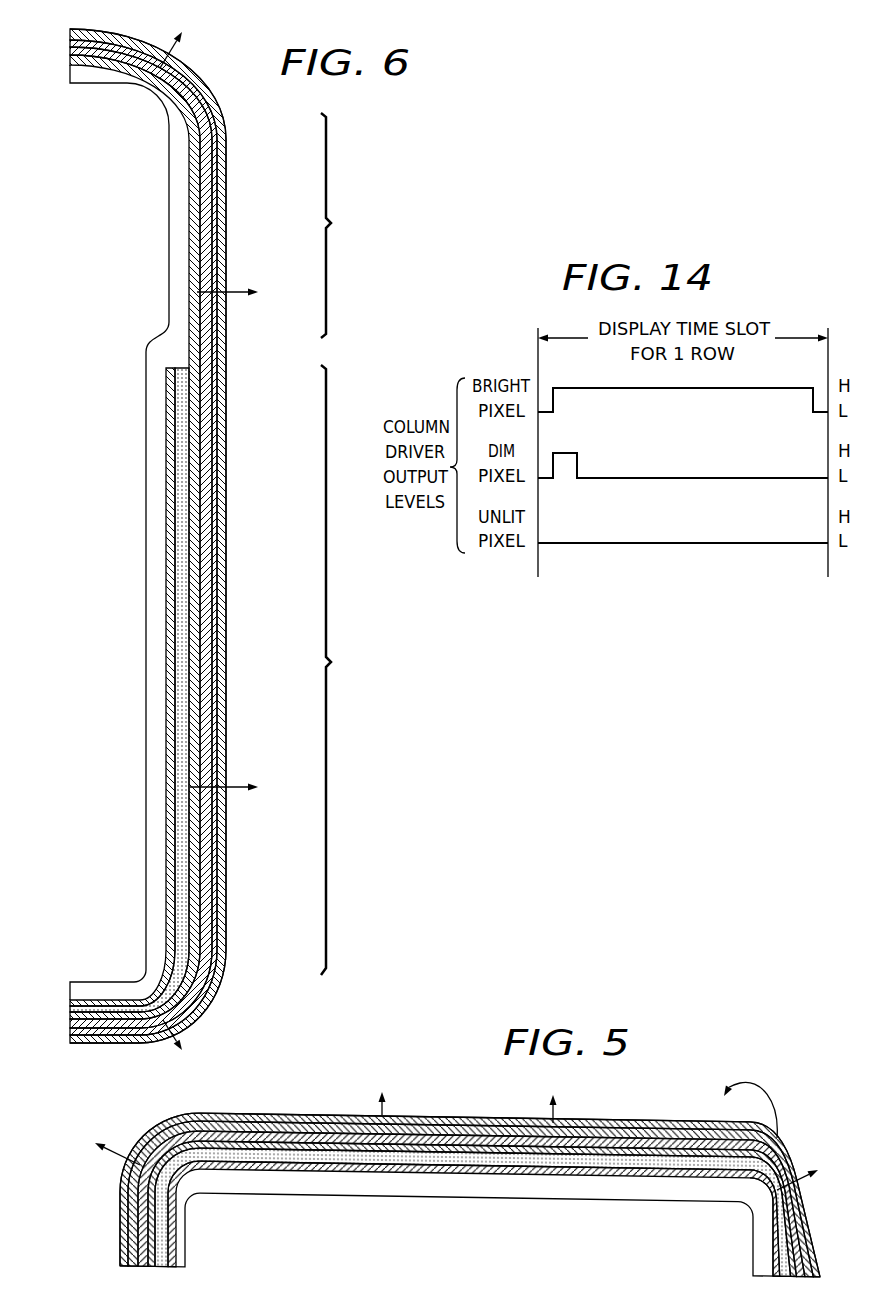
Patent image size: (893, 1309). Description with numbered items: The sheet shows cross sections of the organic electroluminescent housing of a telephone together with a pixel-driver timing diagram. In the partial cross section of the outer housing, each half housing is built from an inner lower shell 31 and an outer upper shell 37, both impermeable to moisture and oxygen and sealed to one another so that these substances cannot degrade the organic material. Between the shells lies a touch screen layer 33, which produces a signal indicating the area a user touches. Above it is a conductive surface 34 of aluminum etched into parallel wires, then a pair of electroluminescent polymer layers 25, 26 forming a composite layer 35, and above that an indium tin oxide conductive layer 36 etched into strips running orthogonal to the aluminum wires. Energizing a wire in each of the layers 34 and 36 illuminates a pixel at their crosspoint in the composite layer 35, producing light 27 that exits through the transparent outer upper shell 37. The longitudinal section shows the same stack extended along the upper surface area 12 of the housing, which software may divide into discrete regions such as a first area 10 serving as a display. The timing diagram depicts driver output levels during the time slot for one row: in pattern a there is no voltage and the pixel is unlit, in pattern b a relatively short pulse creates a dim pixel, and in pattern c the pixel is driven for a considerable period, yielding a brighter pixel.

In FIG. 6, the first area 10 is at (339, 225).
In FIG. 6, the upper surface area 12 is at (339, 670).
In FIG. 5, the electroluminescent polymer layer 25 is at (470, 1179).
In FIG. 5, the electroluminescent polymer layer 26 is at (170, 1217).
In FIG. 6, the light 27 is at (183, 53).
In FIG. 5, the light 27 is at (131, 1160).
In FIG. 6, the inner lower shell 31 is at (157, 782).
In FIG. 5, the inner lower shell 31 is at (353, 1192).
In FIG. 5, the touch screen layer 33 is at (770, 1235).
In FIG. 6, the conductive surface 34 is at (70, 60).
In FIG. 5, the conductive surface 34 is at (157, 1268).
In FIG. 6, the composite layer of electroluminescent polymers 35 is at (70, 50).
In FIG. 5, the composite layer of electroluminescent polymers 35 is at (470, 1179).
In FIG. 6, the indium tin oxide conductive layer 36 is at (70, 34).
In FIG. 5, the indium tin oxide conductive layer 36 is at (136, 1185).
In FIG. 6, the outer upper shell 37 is at (225, 605).
In FIG. 5, the outer upper shell 37 is at (467, 1121).
In FIG. 14, the unlit pixel pattern a is at (765, 553).
In FIG. 14, the dim pixel pattern b is at (720, 487).
In FIG. 14, the bright pixel pattern c is at (683, 393).